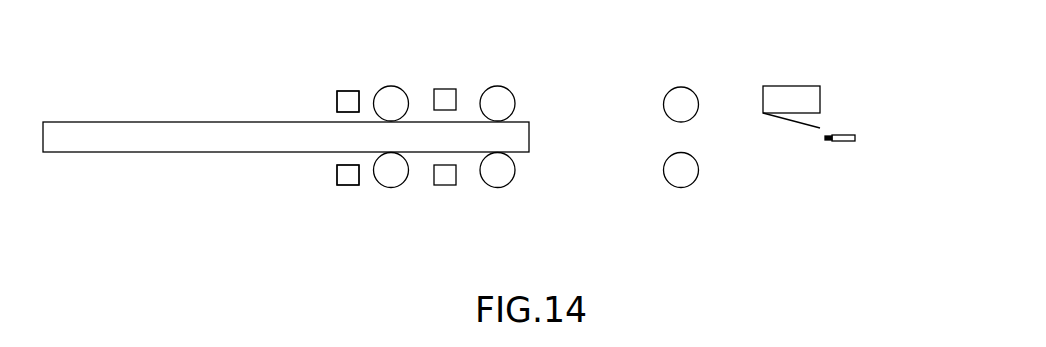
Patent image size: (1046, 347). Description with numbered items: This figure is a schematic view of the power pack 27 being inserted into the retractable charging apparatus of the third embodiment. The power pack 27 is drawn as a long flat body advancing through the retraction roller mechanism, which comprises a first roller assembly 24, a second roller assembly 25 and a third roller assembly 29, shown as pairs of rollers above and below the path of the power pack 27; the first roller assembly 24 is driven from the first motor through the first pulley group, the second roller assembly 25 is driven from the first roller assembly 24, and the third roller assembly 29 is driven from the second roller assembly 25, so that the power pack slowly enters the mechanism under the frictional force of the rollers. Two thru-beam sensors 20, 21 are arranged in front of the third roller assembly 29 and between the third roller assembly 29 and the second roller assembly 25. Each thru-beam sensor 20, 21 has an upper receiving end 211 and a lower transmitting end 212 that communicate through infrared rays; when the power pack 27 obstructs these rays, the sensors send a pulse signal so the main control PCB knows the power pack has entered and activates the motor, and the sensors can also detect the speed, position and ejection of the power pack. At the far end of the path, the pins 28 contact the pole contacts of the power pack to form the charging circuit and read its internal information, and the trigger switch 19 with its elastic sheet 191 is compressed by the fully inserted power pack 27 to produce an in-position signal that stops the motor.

The power pack 27 is at (163, 137).
The thru-beam sensor 21 is at (318, 111).
The upper receiving end 211 is at (338, 101).
The lower transmitting end 212 is at (337, 172).
The third roller assembly 29 is at (391, 104).
The thru-beam sensor 20 is at (427, 106).
The second roller assembly 25 is at (498, 104).
The first roller assembly 24 is at (681, 105).
The trigger switch 19 is at (810, 85).
The elastic sheet 191 is at (792, 122).
The pins 28 is at (855, 136).